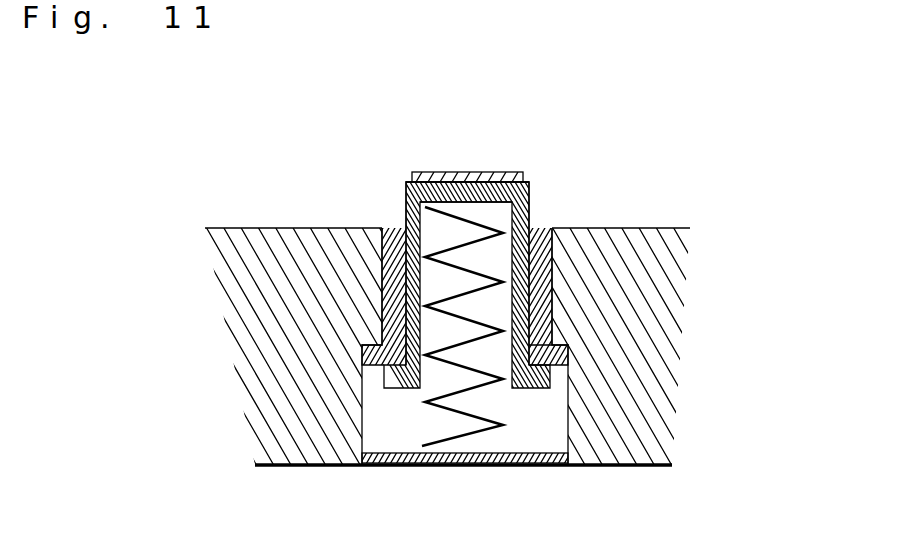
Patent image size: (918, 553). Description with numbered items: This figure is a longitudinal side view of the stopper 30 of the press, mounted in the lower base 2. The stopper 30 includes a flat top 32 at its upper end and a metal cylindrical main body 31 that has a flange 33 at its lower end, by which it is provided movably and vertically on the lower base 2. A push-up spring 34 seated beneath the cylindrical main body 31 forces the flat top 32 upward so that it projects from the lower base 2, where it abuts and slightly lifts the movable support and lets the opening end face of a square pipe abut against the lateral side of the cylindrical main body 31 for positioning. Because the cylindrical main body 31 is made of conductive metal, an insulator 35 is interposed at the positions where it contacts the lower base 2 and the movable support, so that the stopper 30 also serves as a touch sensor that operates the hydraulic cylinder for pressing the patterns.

The lower base 2 is at (333, 435).
The stopper 30 is at (401, 173).
The cylindrical main body 31 is at (528, 208).
The flat top 32 is at (465, 198).
The flange 33 is at (560, 358).
The push-up spring 34 is at (465, 393).
The insulator 35 is at (490, 172).